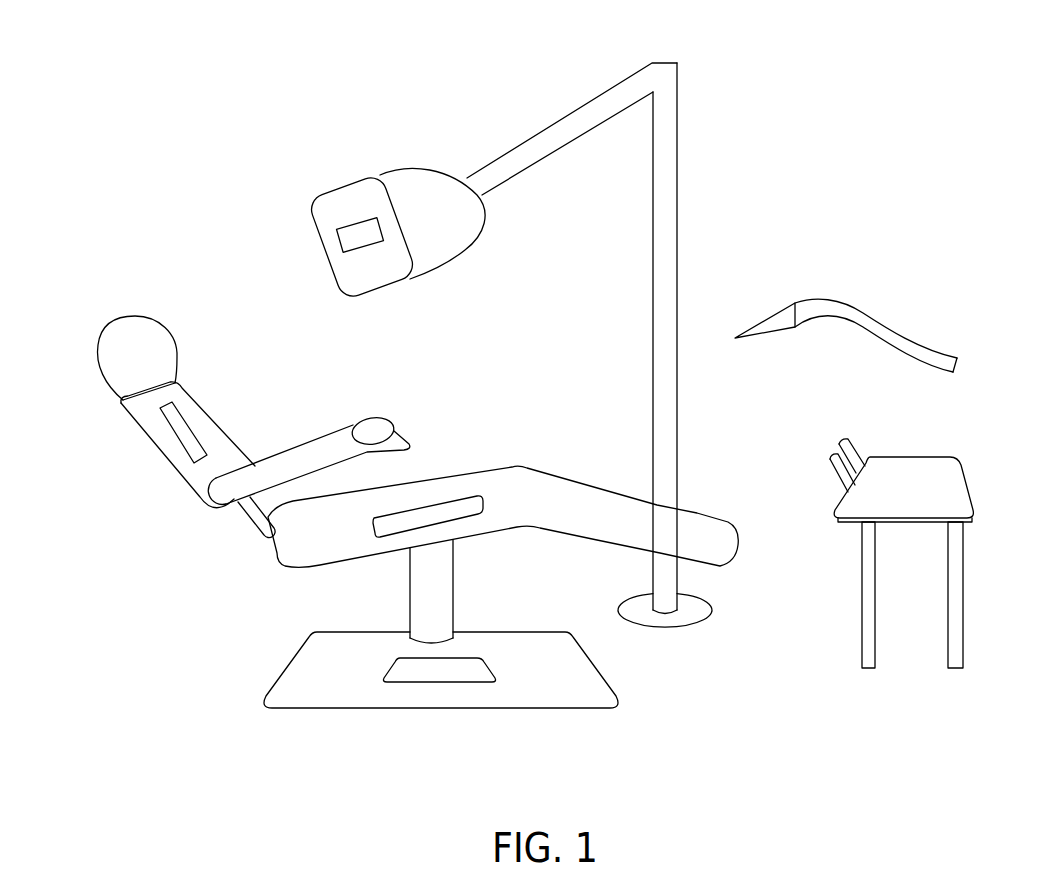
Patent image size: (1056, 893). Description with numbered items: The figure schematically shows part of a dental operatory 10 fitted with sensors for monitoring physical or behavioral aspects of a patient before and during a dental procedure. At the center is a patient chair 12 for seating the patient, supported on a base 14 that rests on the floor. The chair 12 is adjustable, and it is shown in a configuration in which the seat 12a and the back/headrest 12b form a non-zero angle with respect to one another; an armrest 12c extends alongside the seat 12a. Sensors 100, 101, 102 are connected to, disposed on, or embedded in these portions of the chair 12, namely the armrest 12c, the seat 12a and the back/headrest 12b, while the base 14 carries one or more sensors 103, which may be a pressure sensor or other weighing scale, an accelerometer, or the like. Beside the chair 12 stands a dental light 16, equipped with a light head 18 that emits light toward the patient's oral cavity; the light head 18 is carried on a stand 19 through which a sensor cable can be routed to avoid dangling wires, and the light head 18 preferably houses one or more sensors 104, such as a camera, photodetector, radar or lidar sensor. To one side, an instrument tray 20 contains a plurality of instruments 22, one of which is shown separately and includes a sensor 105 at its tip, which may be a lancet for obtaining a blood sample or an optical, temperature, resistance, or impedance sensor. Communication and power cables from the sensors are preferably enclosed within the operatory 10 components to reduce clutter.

The dental operatory 10 is at (752, 110).
The patient chair 12 is at (212, 539).
The seat 12a is at (530, 520).
The back/headrest 12b is at (130, 423).
The armrest 12c is at (287, 467).
The base 14 is at (280, 692).
The dental light 16 is at (538, 98).
The light head 18 is at (345, 200).
The stand 19 is at (667, 208).
The instrument tray 20 is at (951, 478).
The instrument 22 is at (868, 278).
The sensor 100 is at (370, 428).
The sensor 101 is at (457, 505).
The sensor 102 is at (180, 433).
The sensor 103 is at (447, 668).
The sensor 104 is at (363, 232).
The sensor 105 is at (773, 318).